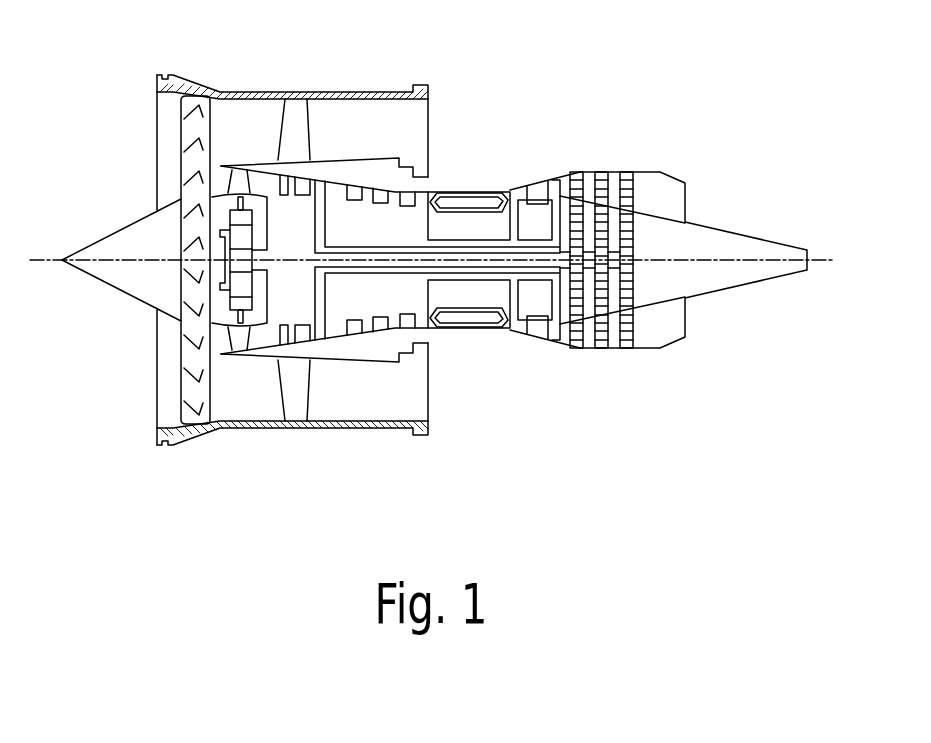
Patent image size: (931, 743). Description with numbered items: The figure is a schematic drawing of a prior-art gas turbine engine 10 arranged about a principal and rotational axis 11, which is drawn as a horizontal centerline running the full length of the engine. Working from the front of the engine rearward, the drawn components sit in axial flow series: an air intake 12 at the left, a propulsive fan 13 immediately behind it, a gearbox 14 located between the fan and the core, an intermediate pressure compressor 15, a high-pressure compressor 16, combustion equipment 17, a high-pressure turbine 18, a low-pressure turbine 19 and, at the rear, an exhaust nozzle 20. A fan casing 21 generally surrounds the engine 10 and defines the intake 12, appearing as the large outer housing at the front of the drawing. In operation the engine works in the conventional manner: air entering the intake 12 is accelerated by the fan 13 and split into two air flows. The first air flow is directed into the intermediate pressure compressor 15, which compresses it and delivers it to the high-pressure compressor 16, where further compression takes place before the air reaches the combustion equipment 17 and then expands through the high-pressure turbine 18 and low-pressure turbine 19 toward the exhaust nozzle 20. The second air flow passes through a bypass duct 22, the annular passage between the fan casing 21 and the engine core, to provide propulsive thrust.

The gas turbine engine 10 is at (432, 244).
The principal and rotational axis 11 is at (40, 257).
The air intake 12 is at (136, 143).
The propulsive fan 13 is at (185, 370).
The gearbox 14 is at (250, 337).
The intermediate pressure compressor 15 is at (208, 213).
The high-pressure compressor 16 is at (417, 213).
The combustion equipment 17 is at (463, 320).
The high-pressure turbine 18 is at (555, 177).
The low-pressure turbine 19 is at (603, 172).
The exhaust nozzle 20 is at (677, 205).
The fan casing 21 is at (370, 93).
The bypass duct 22 is at (415, 117).